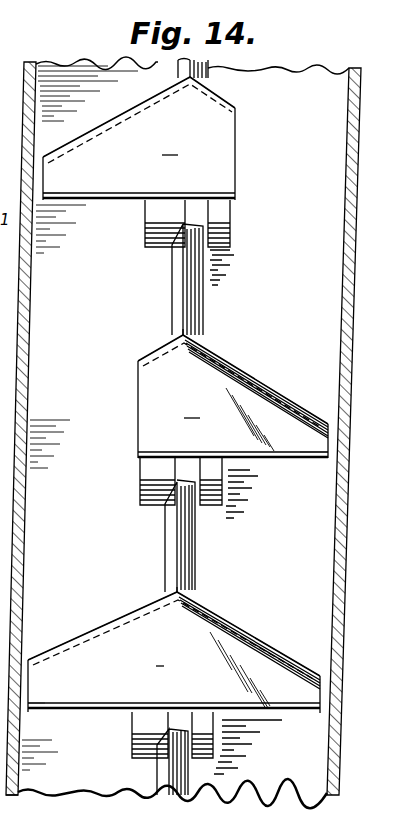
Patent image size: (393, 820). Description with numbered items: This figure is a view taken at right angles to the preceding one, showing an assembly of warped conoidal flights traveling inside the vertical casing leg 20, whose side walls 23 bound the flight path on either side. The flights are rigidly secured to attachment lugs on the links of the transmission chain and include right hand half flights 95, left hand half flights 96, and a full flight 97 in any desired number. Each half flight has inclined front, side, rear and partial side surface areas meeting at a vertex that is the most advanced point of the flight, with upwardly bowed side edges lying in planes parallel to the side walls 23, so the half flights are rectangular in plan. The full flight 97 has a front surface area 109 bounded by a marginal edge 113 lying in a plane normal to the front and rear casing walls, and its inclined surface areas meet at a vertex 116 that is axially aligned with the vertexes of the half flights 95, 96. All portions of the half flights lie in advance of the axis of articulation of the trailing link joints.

The vertical casing leg 20 is at (12, 795).
The side walls 23 is at (343, 633).
The right hand half flight 95 is at (328, 460).
The left hand half flight 96 is at (44, 199).
The full flight 97 is at (28, 712).
The front surface area 109 is at (174, 652).
The marginal edge 113 is at (261, 712).
The vertex 116 is at (177, 592).